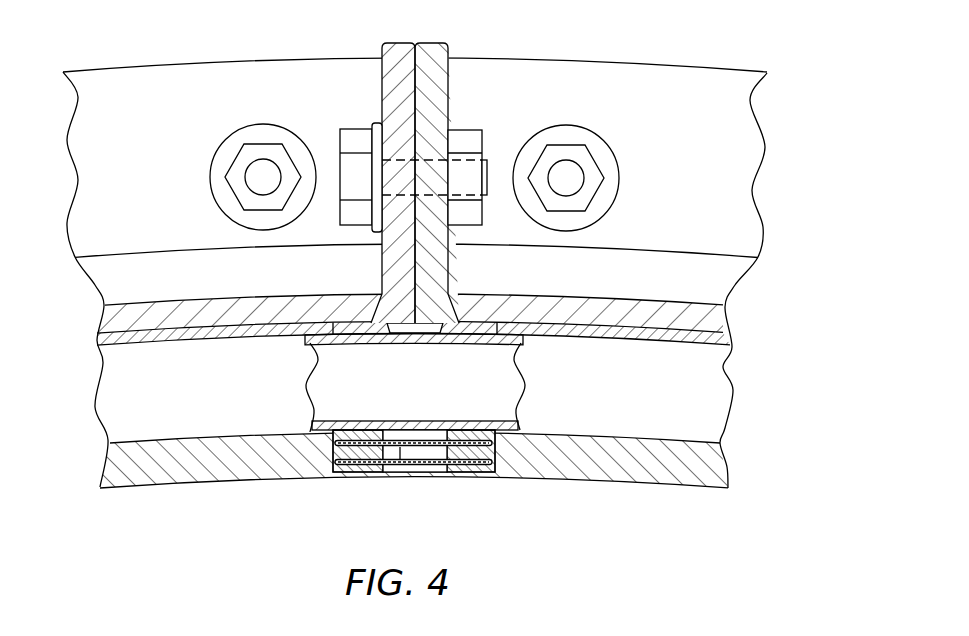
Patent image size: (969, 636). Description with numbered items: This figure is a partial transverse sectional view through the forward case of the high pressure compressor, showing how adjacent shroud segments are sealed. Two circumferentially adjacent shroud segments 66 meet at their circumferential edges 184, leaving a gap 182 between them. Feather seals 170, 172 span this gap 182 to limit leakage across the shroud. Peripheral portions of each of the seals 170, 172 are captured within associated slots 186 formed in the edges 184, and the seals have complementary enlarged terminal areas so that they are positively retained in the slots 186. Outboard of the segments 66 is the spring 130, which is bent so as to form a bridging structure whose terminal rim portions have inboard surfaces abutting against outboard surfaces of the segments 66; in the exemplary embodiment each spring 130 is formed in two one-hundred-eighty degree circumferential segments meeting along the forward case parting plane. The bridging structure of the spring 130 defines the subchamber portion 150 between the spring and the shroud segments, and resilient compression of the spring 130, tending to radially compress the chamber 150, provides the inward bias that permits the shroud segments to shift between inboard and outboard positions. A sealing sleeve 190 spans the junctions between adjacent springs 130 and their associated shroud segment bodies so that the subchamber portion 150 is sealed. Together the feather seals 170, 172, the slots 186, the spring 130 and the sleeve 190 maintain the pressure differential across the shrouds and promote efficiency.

The shroud segment 66 is at (202, 477).
The spring 130 is at (220, 337).
The subchamber portion 150 is at (160, 420).
The feather seal 170 is at (428, 471).
The feather seal 172 is at (397, 473).
The gap 182 is at (432, 430).
The circumferential edge 184 is at (437, 463).
The slot 186 is at (492, 447).
The sealing sleeve 190 is at (353, 345).